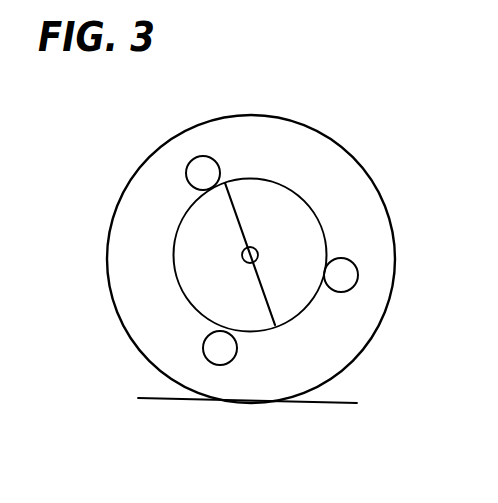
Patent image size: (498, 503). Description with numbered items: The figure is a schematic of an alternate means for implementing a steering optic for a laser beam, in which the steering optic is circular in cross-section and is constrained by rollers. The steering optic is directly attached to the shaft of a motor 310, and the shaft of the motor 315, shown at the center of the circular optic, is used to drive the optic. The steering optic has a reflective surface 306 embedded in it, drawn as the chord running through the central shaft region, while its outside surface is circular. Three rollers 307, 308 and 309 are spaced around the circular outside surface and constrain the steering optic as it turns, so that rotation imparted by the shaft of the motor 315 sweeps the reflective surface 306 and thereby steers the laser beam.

The motor 310 is at (335, 140).
The reflective surface 306 is at (253, 288).
The shaft of the motor 315 is at (243, 253).
The roller 308 is at (192, 162).
The roller 307 is at (345, 297).
The roller 309 is at (215, 367).